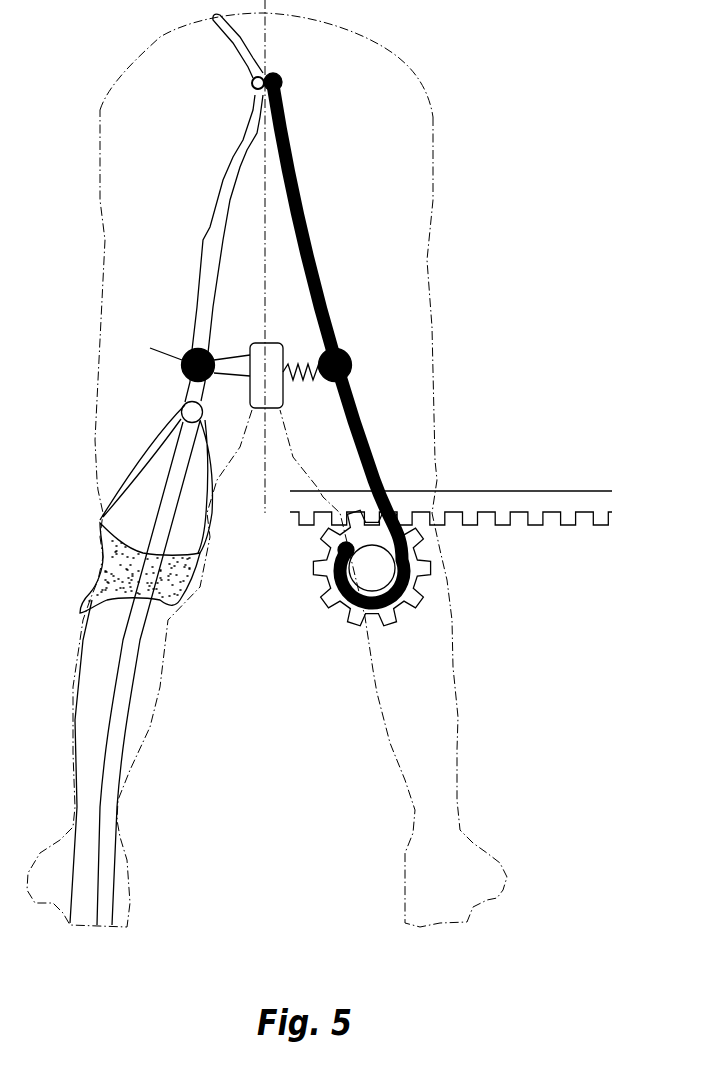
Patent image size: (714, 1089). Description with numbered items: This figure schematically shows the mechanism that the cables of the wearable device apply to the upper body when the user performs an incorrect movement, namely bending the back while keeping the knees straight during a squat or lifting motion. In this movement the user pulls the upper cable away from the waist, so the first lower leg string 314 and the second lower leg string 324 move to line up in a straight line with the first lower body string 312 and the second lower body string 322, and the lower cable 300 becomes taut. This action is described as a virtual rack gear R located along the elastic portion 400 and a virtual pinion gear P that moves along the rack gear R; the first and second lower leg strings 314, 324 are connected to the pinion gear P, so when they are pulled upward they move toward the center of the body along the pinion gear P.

The lower cable 300 is at (385, 389).
The (1-1)th lower string 312 is at (419, 217).
The (2-1)th lower string 322 is at (313, 241).
The (1-2)th lower string 314 is at (454, 482).
The (2-2)th lower string 324 is at (372, 461).
The elastic portion 400 is at (296, 353).
The pinion gear P is at (413, 597).
The rack gear R is at (573, 497).